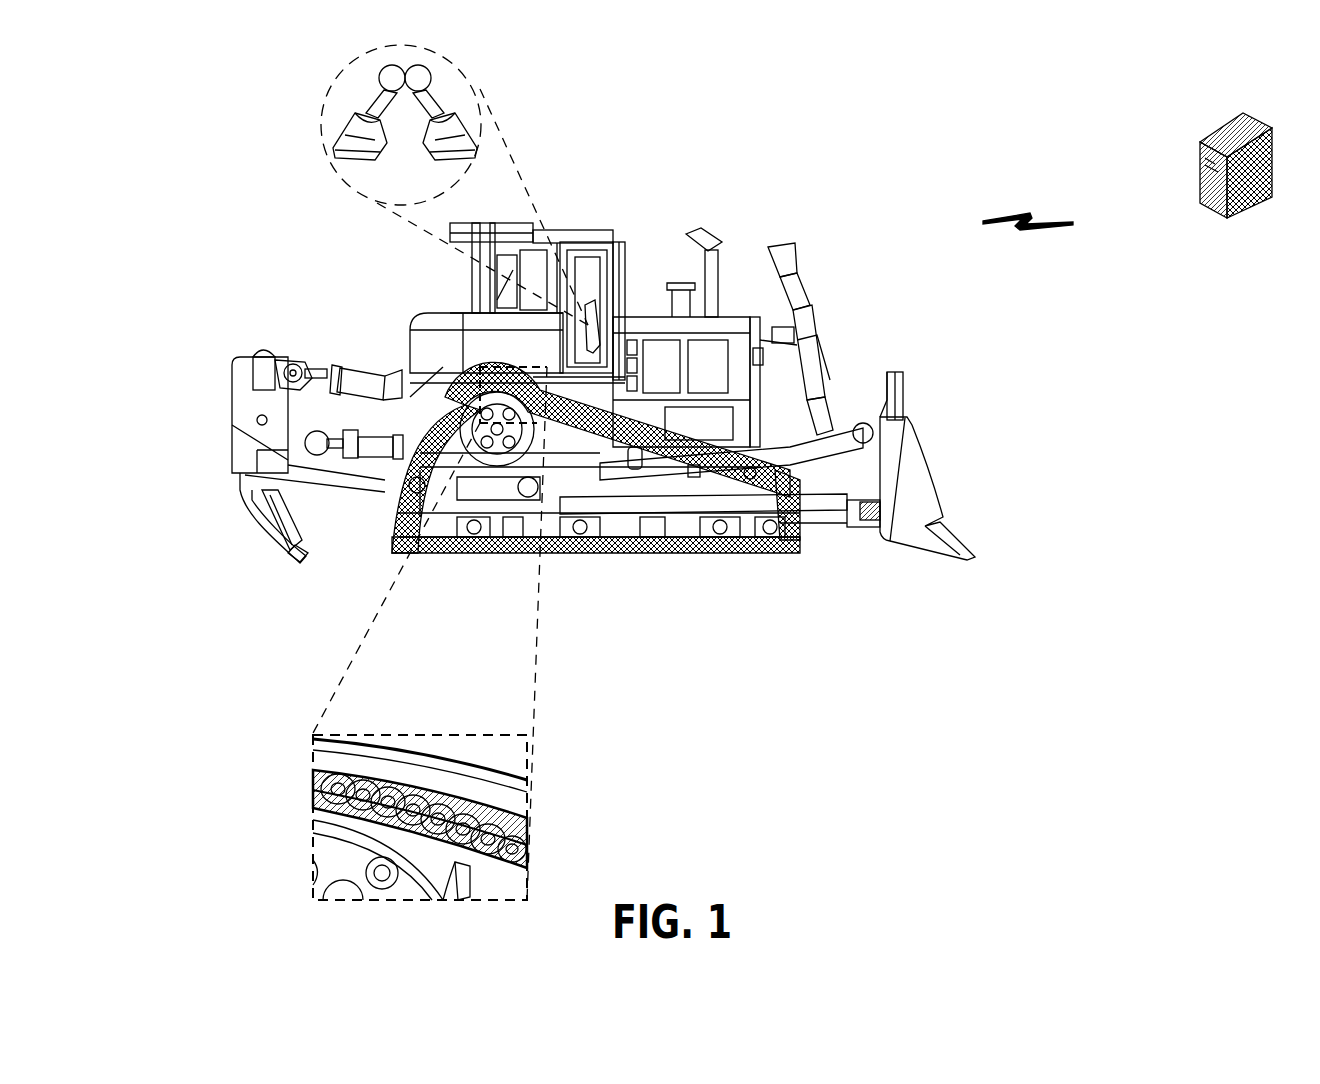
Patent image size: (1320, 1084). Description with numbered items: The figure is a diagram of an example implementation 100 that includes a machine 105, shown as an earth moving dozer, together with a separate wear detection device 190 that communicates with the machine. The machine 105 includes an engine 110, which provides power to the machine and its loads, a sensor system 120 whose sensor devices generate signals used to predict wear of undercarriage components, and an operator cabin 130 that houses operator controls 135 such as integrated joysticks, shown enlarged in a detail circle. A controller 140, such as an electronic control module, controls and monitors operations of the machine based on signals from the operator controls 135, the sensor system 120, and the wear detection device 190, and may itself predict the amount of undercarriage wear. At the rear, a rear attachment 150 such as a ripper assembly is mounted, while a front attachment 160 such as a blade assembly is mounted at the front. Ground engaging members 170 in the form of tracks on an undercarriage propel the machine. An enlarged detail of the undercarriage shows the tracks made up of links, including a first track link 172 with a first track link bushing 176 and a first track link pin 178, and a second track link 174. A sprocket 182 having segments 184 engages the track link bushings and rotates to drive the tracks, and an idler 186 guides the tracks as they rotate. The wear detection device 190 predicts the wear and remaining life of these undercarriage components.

The example implementation 100 is at (182, 71).
The machine 105 is at (323, 226).
The engine 110 is at (728, 379).
The sensor system 120 is at (640, 312).
The operator cabin 130 is at (571, 215).
The operator controls 135 is at (479, 92).
The controller 140 is at (536, 354).
The rear attachment 150 is at (252, 505).
The front attachment 160 is at (917, 463).
The ground engaging members 170 is at (763, 542).
The first track link 172 is at (393, 783).
The second track link 174 is at (487, 810).
The first track link bushing 176 is at (417, 797).
The first track link pin 178 is at (330, 790).
The sprocket 182 is at (407, 888).
The segment 184 is at (460, 868).
The idler 186 is at (417, 487).
The wear detection device 190 is at (1147, 208).